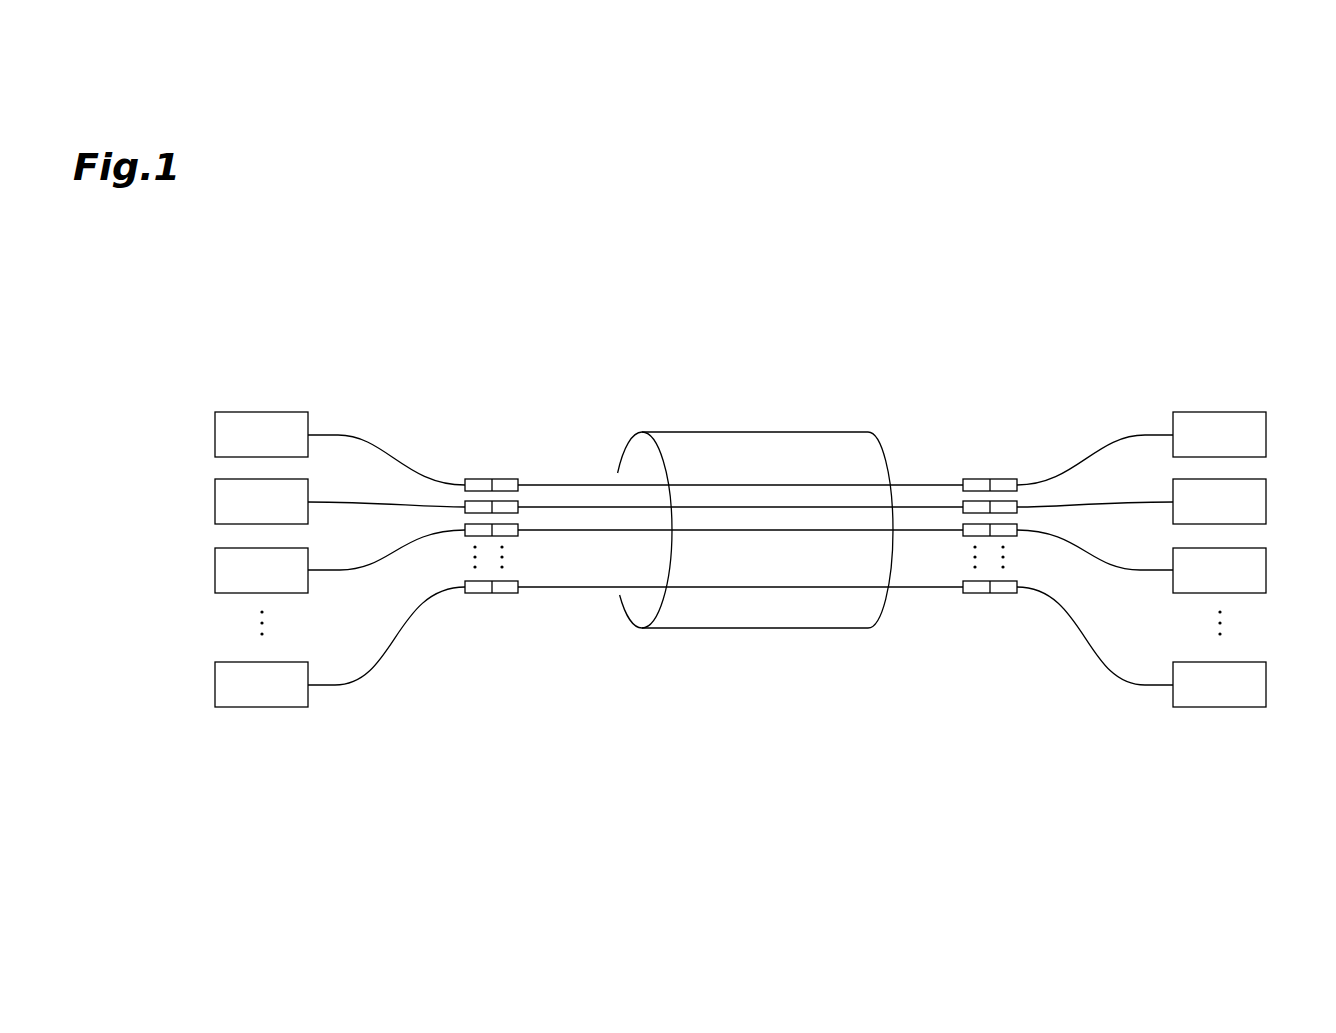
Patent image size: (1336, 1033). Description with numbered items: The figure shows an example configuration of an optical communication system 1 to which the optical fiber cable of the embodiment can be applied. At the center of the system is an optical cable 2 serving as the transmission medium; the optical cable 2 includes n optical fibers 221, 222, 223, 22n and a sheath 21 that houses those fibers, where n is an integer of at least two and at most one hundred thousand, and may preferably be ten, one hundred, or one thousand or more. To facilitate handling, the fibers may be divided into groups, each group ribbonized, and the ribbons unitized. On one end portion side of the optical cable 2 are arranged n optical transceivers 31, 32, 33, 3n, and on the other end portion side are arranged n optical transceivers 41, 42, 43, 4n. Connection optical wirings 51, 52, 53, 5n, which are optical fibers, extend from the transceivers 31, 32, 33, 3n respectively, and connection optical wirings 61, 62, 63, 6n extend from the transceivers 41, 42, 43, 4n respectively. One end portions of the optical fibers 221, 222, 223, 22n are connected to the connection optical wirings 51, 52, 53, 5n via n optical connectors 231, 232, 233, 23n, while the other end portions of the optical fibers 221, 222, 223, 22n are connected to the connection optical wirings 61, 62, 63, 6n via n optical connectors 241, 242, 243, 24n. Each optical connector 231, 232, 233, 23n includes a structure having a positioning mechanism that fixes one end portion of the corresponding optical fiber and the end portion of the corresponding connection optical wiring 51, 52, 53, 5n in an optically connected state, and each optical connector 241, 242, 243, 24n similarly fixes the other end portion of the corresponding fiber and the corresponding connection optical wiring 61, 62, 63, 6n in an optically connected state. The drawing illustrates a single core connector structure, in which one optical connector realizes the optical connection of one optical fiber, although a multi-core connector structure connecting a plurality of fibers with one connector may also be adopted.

The optical communication system 1 is at (1013, 342).
The optical cable 2 is at (988, 408).
The sheath 21 is at (805, 629).
The optical fiber 221 is at (546, 484).
The optical fiber 222 is at (587, 506).
The optical fiber 223 is at (568, 531).
The optical fiber 22n is at (572, 589).
The optical connector 231 is at (503, 479).
The optical connector 232 is at (468, 502).
The optical connector 233 is at (468, 537).
The optical connector 23n is at (477, 594).
The optical connector 241 is at (975, 479).
The optical connector 242 is at (1010, 500).
The optical connector 243 is at (968, 537).
The optical connector 24n is at (1005, 594).
The optical transceiver 31 is at (215, 428).
The optical transceiver 32 is at (215, 496).
The optical transceiver 33 is at (215, 562).
The optical transceiver 3n is at (215, 676).
The optical transceiver 41 is at (1268, 432).
The optical transceiver 42 is at (1268, 499).
The optical transceiver 43 is at (1268, 566).
The optical transceiver 4n is at (1268, 680).
The connection optical wiring 51 is at (378, 446).
The connection optical wiring 52 is at (330, 501).
The connection optical wiring 53 is at (331, 572).
The connection optical wiring 5n is at (331, 687).
The connection optical wiring 61 is at (1103, 450).
The connection optical wiring 62 is at (1148, 506).
The connection optical wiring 63 is at (1153, 574).
The connection optical wiring 6n is at (1148, 688).